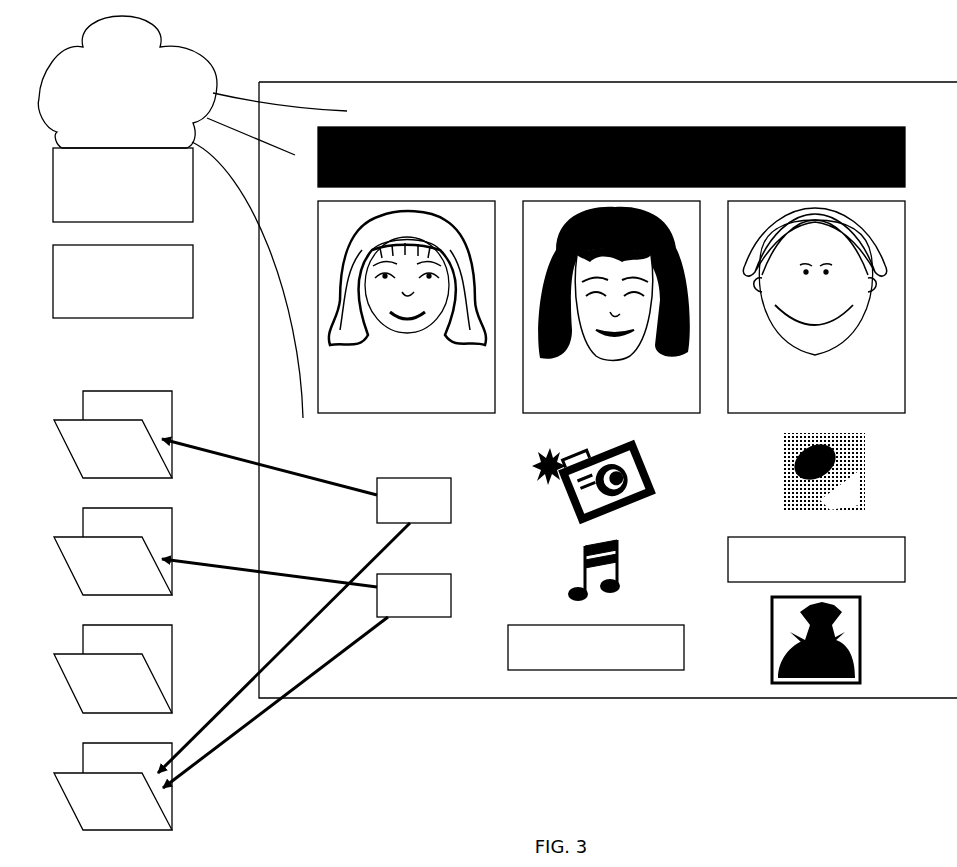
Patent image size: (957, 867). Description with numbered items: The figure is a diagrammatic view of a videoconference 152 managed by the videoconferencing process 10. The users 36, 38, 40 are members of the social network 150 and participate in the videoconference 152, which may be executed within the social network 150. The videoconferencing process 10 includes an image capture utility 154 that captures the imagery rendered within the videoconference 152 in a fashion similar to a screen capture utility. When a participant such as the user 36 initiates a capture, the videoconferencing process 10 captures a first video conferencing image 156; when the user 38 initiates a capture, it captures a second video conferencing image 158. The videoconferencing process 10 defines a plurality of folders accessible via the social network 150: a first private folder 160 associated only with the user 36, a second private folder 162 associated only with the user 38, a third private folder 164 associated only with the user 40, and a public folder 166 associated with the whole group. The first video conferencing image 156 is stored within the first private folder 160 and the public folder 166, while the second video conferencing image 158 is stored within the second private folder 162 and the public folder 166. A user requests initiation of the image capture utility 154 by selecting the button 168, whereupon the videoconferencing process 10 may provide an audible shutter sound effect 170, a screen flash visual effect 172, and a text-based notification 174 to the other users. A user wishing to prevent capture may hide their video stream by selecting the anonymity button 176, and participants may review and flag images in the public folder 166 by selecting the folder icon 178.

The social network 150 is at (127, 82).
The videoconferencing process 10 is at (123, 185).
The image capture utility 154 is at (123, 281).
The videoconference 152 is at (611, 157).
The user 40 is at (406, 307).
The user 38 is at (611, 307).
The user 36 is at (816, 307).
The visual effect 172 is at (522, 480).
The sound effect 170 is at (568, 566).
The notification 174 is at (506, 640).
The folder icon 178 is at (862, 470).
The button 168 is at (906, 565).
The anonymity button 176 is at (862, 632).
The first video conferencing image 156 is at (304, 606).
The second video conferencing image 158 is at (306, 673).
The first private folder 160 is at (113, 434).
The second private folder 162 is at (113, 551).
The third private folder 164 is at (113, 669).
The public folder 166 is at (113, 786).